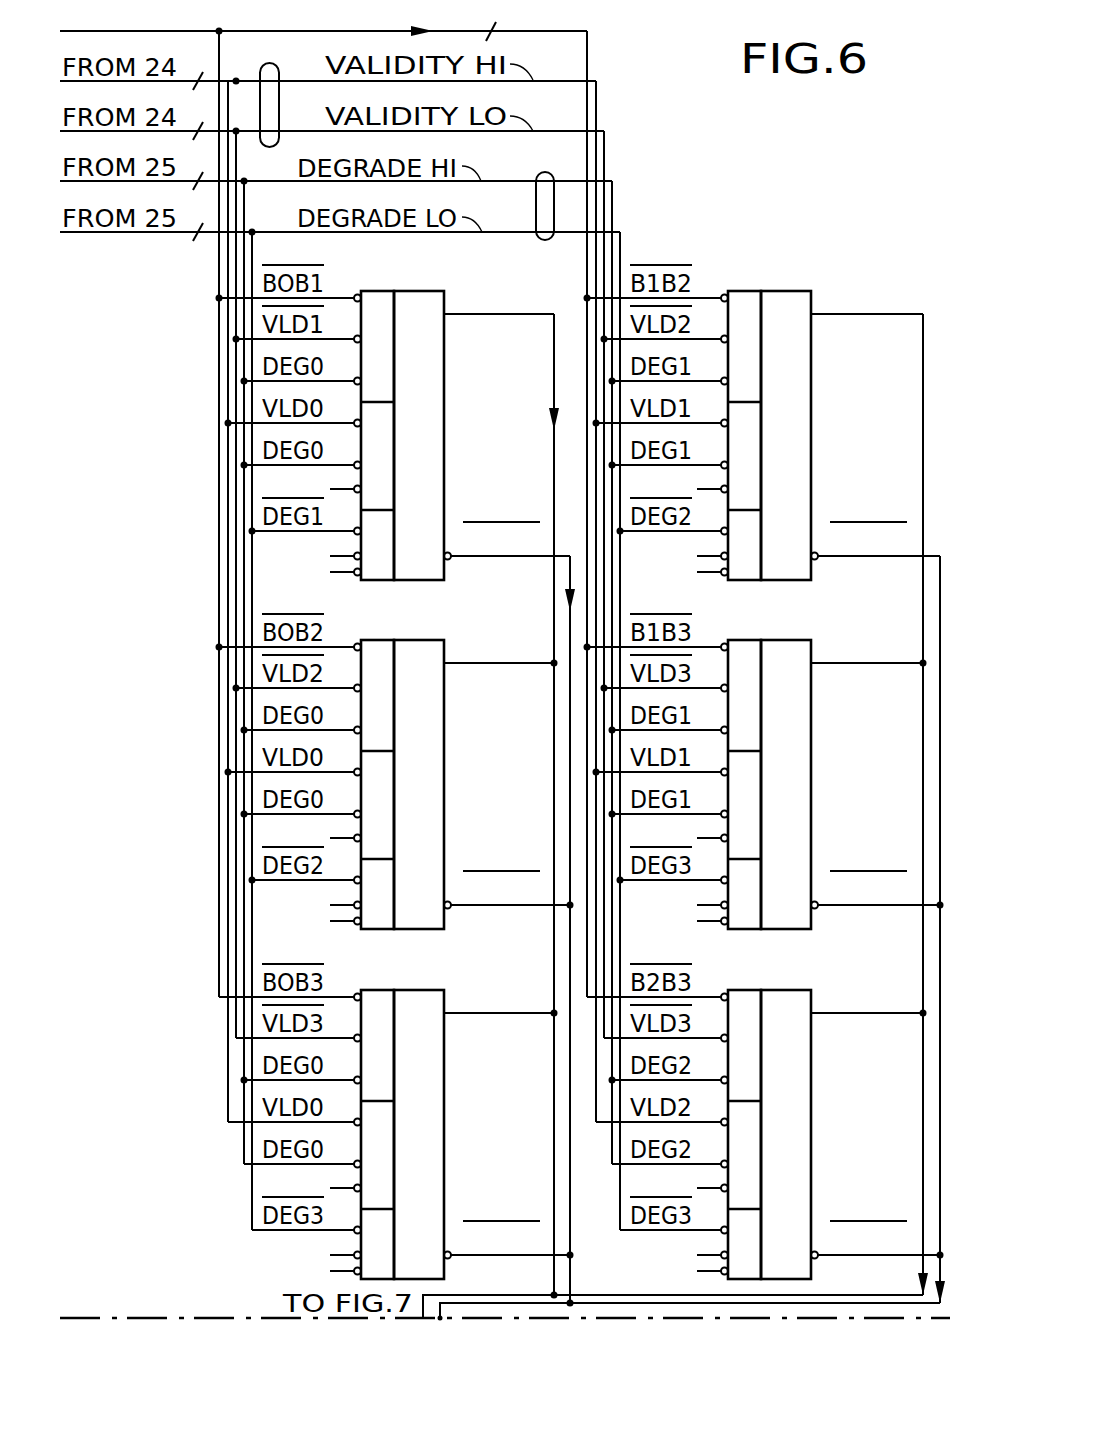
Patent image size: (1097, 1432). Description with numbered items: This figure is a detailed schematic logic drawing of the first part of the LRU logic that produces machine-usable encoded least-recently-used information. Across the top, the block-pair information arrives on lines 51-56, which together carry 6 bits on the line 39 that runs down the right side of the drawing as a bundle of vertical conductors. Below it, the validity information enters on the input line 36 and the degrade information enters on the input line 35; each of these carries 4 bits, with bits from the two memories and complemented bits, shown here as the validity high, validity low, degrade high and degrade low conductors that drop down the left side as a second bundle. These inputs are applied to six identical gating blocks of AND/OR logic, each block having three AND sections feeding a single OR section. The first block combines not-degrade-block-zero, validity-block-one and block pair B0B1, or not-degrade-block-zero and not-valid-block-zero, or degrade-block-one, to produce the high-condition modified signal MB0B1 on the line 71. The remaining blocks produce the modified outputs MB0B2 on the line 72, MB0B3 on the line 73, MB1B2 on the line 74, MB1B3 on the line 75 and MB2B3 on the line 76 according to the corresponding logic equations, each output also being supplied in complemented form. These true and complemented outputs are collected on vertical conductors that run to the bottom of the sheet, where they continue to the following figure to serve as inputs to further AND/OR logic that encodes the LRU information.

The lines 51-56 is at (80, 31).
The bits 4 is at (201, 144).
The bits 6 is at (503, 20).
The input line 35 is at (543, 172).
The input line 36 is at (268, 63).
The line 39 is at (587, 31).
The line 71 is at (478, 316).
The line 72 is at (478, 665).
The line 73 is at (478, 1015).
The line 74 is at (845, 316).
The line 75 is at (845, 665).
The line 76 is at (845, 1015).